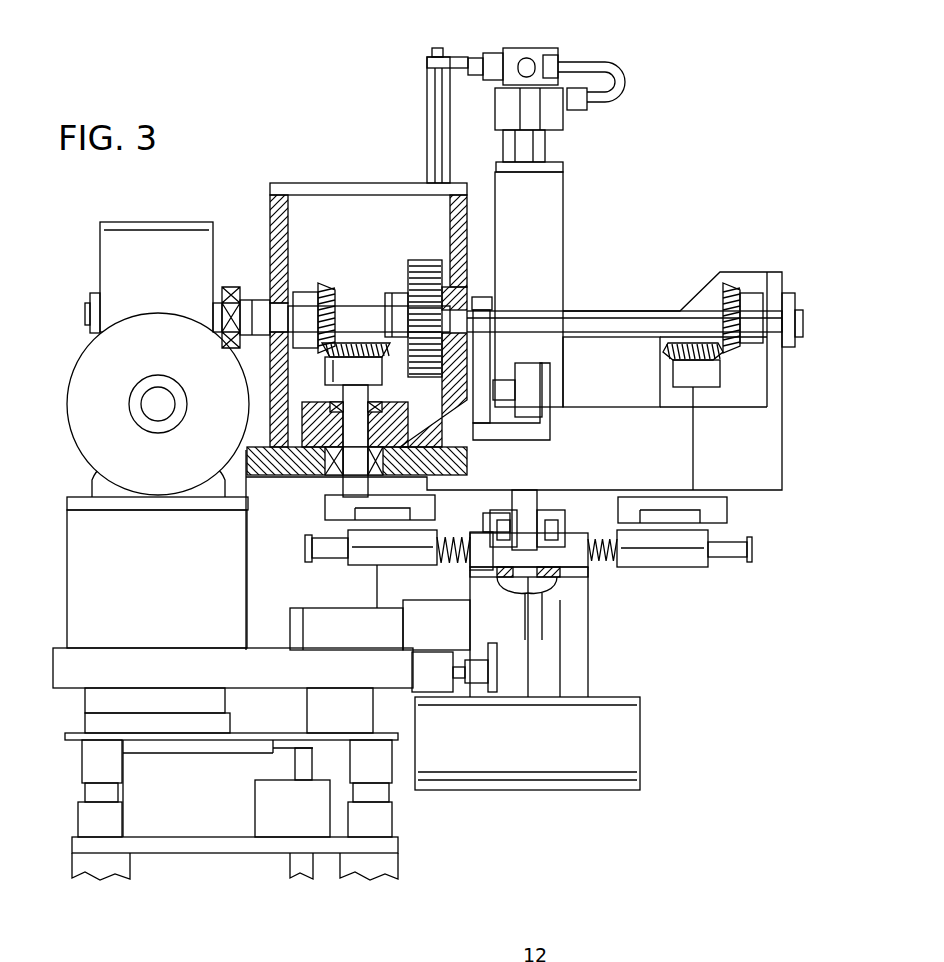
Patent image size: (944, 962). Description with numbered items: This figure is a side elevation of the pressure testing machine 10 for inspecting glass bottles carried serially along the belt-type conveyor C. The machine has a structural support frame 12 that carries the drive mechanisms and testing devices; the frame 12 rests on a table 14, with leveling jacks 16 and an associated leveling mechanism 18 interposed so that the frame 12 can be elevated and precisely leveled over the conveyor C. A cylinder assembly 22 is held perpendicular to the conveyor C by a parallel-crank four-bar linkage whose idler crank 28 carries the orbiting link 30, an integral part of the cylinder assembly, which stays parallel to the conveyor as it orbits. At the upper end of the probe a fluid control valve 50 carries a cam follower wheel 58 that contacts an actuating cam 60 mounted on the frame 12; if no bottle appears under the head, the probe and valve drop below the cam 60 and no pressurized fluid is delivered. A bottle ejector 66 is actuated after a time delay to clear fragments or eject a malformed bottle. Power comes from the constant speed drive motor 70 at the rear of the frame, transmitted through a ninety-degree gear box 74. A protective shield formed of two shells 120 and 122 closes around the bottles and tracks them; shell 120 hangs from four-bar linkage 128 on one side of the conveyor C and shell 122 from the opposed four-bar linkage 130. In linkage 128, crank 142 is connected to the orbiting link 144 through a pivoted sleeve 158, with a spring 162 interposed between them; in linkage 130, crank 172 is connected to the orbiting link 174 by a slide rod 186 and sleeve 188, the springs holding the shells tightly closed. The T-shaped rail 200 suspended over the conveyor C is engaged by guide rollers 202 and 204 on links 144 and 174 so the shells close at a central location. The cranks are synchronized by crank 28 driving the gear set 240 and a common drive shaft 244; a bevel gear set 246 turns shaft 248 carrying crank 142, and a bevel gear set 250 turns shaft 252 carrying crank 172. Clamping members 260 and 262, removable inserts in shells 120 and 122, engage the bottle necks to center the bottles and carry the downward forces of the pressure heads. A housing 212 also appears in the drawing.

The pressure testing machine 10 is at (308, 124).
The structural support frame 12 is at (272, 198).
The table 14 is at (215, 852).
The leveling jacks 16 is at (120, 778).
The leveling mechanism 18 is at (268, 805).
The cylinder assembly 22 is at (547, 218).
The idler crank 28 is at (481, 297).
The orbiting link 30 is at (532, 375).
The fluid control valve 50 is at (525, 48).
The cam follower wheel 58 is at (478, 55).
The actuating cam 60 is at (450, 60).
The bottle ejector 66 is at (480, 665).
The drive motor 70 is at (88, 407).
The gear box 74 is at (137, 246).
The shell 120 is at (549, 683).
The shell 122 is at (508, 690).
The four-bar linkage 128 is at (765, 527).
The four-bar linkage 130 is at (312, 515).
The crank 142 is at (730, 505).
The orbiting link 144 is at (582, 556).
The pivoted sleeve 158 is at (692, 560).
The spring 162 is at (600, 558).
The crank 172 is at (330, 505).
The orbiting link 174 is at (468, 573).
The slide rod 186 is at (318, 551).
The sleeve 188 is at (368, 552).
The T-shaped rail 200 is at (530, 494).
The guide roller 202 is at (563, 513).
The guide roller 204 is at (485, 520).
The housing 212 is at (760, 462).
The gear set 240 is at (420, 262).
The common drive shaft 244 is at (583, 318).
The bevel gear set 246 is at (732, 352).
The shaft 248 is at (697, 478).
The bevel gear set 250 is at (322, 352).
The shaft 252 is at (373, 423).
The clamping member 260 is at (541, 580).
The clamping member 262 is at (505, 578).
The conveyor C is at (620, 722).